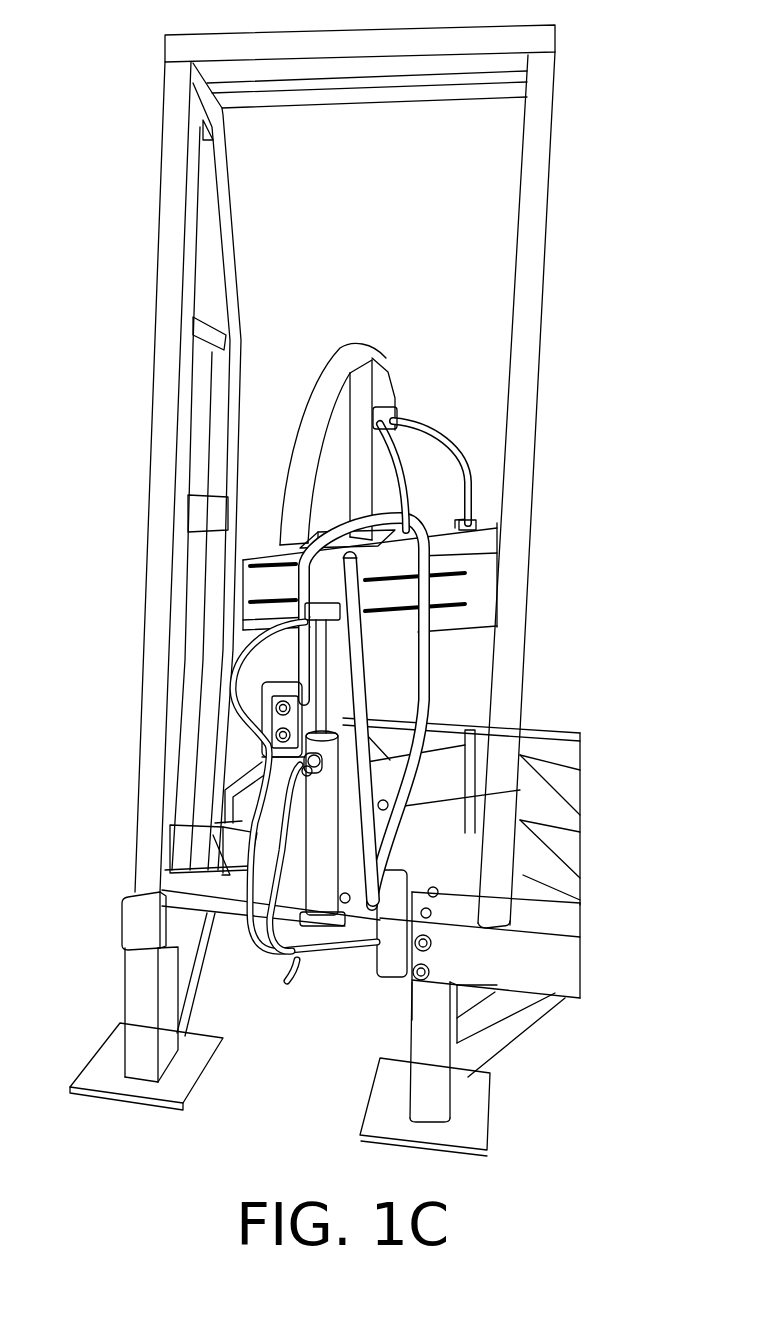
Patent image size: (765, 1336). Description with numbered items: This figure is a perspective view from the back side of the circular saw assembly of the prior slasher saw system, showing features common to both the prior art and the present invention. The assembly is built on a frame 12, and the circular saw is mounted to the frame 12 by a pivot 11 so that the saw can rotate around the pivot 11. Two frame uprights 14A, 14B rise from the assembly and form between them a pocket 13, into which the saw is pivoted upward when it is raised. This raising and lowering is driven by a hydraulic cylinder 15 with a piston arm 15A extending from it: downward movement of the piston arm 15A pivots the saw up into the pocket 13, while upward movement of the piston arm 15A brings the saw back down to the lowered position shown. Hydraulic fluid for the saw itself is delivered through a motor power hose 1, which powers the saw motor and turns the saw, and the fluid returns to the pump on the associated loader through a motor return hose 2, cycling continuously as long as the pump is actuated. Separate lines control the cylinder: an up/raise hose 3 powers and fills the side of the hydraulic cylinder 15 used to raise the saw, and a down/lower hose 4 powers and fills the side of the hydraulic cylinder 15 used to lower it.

The motor power hose 1 is at (418, 572).
The motor return hose 2 is at (418, 640).
The up/raise hose 3 is at (163, 868).
The down/lower hose 4 is at (293, 965).
The pivot 11 is at (386, 806).
The frame 12 is at (550, 958).
The pocket 13 is at (394, 345).
The frame upright 14A is at (152, 690).
The frame upright 14B is at (518, 511).
The hydraulic cylinder 15 is at (318, 858).
The piston arm 15A is at (327, 660).